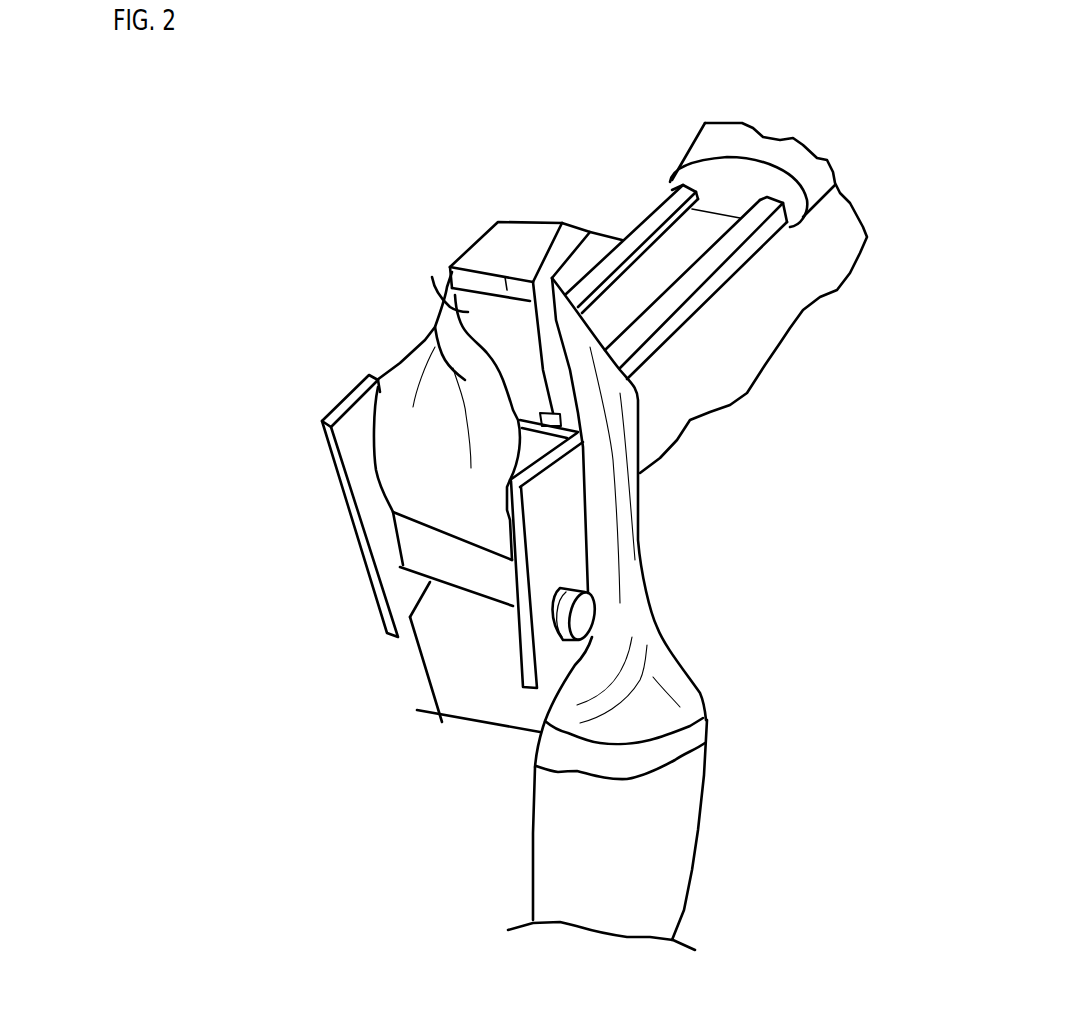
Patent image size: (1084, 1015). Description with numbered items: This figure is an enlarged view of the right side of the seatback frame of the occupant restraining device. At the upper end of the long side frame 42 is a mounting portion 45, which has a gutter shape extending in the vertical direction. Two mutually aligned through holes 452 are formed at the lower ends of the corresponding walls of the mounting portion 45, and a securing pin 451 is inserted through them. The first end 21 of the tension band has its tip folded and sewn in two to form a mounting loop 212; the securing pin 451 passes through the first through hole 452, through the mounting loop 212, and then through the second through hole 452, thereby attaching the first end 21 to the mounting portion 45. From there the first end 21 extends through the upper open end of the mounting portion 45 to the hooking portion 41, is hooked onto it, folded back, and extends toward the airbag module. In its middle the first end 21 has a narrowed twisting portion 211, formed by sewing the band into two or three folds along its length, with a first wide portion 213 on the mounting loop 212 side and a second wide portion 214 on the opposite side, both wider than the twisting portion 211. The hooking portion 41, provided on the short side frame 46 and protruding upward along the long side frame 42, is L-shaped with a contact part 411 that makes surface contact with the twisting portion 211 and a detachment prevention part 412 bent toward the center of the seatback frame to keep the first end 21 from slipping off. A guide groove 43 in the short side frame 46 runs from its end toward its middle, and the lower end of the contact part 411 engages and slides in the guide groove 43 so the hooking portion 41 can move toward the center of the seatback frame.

The first end 21 is at (602, 536).
The twisting portion 211 is at (628, 433).
The mounting loop 212 is at (490, 578).
The first wide portion 213 is at (404, 375).
The second wide portion 214 is at (670, 822).
The hooking portion 41 is at (517, 237).
The contact part 411 is at (432, 277).
The detachment prevention part 412 is at (572, 235).
The long side frame 42 is at (490, 665).
The guide groove 43 is at (733, 227).
The mounting portion 45 is at (337, 404).
The securing pin 451 is at (588, 610).
The through hole 452 is at (563, 640).
The short side frame 46 is at (602, 248).